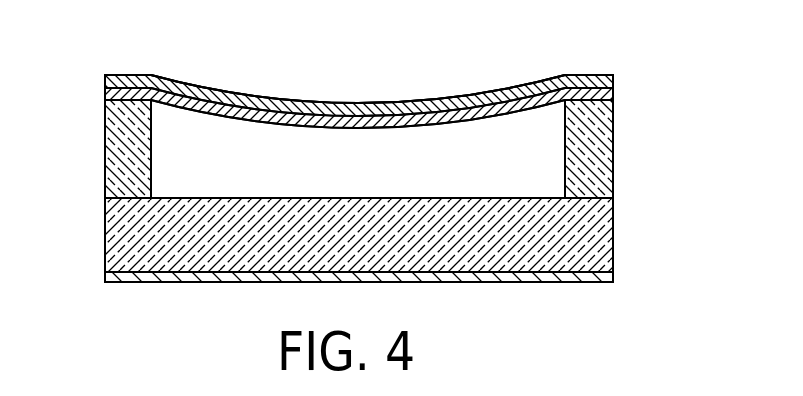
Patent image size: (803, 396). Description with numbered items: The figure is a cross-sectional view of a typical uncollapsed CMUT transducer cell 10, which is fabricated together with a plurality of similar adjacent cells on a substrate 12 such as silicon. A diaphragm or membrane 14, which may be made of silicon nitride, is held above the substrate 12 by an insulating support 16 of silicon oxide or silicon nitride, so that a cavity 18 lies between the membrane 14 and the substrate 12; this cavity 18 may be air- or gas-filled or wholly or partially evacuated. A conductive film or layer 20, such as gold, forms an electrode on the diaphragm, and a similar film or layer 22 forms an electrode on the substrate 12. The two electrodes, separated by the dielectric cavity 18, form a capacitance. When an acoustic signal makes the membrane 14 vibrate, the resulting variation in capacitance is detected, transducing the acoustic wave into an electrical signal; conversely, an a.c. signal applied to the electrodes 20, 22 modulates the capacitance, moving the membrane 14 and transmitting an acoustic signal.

The CMUT transducer cell 10 is at (355, 91).
The substrate 12 is at (613, 238).
The membrane 14 is at (105, 93).
The insulating support 16 is at (105, 150).
The cavity 18 is at (468, 160).
The conductive layer 20 is at (613, 82).
The conductive layer 22 is at (105, 277).